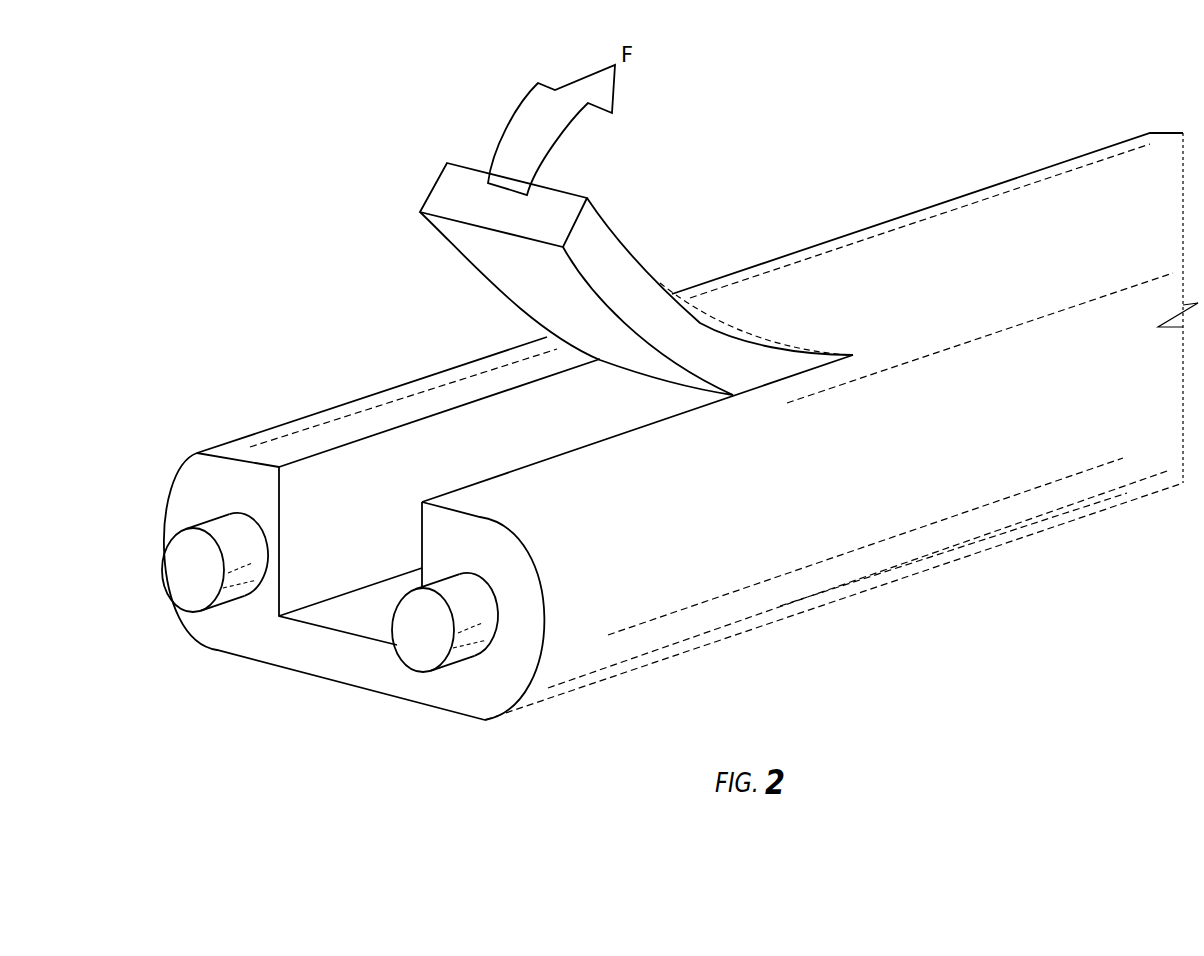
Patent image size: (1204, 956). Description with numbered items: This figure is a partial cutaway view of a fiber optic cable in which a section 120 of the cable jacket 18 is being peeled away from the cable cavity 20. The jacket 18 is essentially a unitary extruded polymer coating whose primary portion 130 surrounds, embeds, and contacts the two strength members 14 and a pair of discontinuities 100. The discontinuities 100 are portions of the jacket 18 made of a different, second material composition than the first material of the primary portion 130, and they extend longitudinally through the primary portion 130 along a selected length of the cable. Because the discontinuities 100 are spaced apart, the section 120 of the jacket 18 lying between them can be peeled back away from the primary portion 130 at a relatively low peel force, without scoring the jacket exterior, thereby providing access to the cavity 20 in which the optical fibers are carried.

The strength members 14 is at (180, 568).
The cable jacket 18 is at (693, 622).
The cavity 20 is at (364, 531).
The discontinuities 100 is at (522, 335).
The section of the jacket 120 is at (607, 218).
The primary portion of the jacket 130 is at (944, 574).